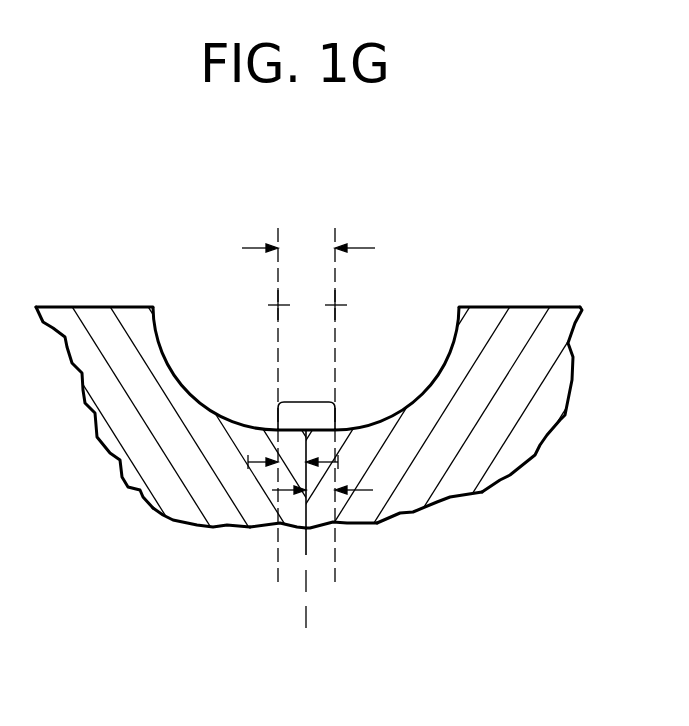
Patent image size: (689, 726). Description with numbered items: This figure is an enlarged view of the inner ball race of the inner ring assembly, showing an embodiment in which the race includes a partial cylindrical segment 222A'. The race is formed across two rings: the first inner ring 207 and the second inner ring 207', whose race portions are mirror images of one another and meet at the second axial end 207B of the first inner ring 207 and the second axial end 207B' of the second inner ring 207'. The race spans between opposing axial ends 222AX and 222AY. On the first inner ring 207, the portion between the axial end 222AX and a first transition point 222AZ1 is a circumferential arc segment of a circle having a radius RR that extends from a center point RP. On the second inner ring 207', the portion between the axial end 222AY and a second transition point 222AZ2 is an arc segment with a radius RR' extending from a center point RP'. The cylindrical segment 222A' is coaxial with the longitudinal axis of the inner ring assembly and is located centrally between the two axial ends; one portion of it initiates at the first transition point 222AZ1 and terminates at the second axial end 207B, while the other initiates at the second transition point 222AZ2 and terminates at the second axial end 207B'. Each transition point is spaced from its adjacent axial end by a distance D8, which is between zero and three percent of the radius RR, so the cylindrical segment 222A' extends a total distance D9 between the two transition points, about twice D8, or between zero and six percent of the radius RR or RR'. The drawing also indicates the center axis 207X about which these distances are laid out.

The first inner ring 207 is at (205, 419).
The second inner ring 207' is at (379, 419).
The axial end of the inner ball race 222AX is at (150, 302).
The axial end of the inner ball race 222AY is at (464, 302).
The radius RR is at (215, 365).
The radius RR' is at (397, 366).
The center point RP is at (254, 405).
The center point RP' is at (371, 405).
The distance D9 is at (370, 248).
The cylindrical segment 222A' is at (299, 380).
The first transition point 222AZ1 is at (153, 508).
The second transition point 222AZ2 is at (413, 512).
The second axial end of the second inner ring 207B' is at (244, 560).
The second axial end of the first inner ring 207B is at (355, 551).
The distance D8 is at (248, 463).
The center axis 207X is at (307, 603).